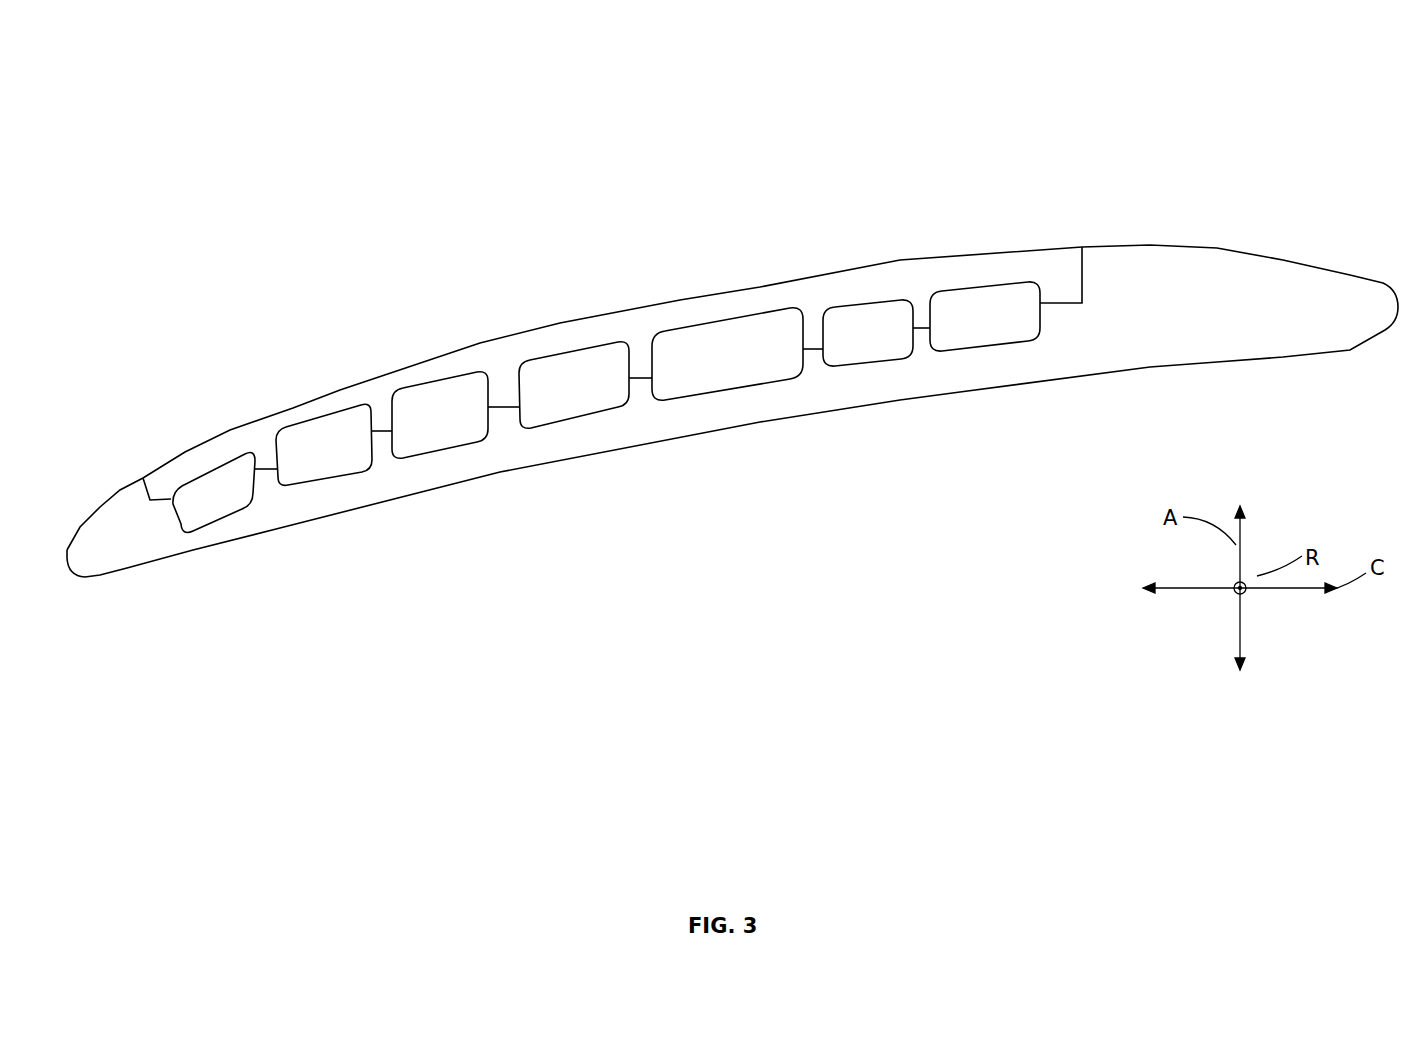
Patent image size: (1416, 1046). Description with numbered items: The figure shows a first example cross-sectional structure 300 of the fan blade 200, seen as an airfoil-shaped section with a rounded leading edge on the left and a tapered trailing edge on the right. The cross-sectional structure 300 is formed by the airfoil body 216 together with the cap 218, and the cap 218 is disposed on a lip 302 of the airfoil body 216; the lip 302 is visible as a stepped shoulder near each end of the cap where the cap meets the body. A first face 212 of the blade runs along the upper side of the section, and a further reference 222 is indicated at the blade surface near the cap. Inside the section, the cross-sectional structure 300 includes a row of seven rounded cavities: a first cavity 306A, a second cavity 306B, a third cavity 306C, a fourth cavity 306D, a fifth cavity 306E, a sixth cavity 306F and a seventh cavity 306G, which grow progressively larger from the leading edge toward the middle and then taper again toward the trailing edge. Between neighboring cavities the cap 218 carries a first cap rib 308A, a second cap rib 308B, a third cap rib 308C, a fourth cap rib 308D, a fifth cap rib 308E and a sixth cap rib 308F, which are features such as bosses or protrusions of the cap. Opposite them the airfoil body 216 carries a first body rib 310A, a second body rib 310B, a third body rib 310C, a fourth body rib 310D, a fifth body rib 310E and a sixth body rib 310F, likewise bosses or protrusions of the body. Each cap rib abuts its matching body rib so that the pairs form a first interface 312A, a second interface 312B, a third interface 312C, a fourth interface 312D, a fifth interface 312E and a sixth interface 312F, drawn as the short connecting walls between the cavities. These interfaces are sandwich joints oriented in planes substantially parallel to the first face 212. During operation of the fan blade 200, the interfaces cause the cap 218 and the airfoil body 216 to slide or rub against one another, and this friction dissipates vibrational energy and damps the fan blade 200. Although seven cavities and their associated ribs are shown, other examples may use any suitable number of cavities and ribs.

The fan blade 200 is at (1213, 97).
The cross-sectional structure 300 is at (1121, 160).
The skin 222 is at (1111, 198).
The cap 218 is at (1072, 247).
The first face 212 is at (915, 256).
The lip 302 is at (157, 503).
The airfoil body 216 is at (1112, 374).
The first cavity 306A is at (194, 536).
The second cavity 306B is at (318, 482).
The third cavity 306C is at (455, 447).
The fourth cavity 306D is at (582, 421).
The fifth cavity 306E is at (738, 392).
The sixth cavity 306F is at (875, 365).
The seventh cavity 306G is at (1020, 346).
The first cap rib 308A is at (255, 460).
The second cap rib 308B is at (366, 409).
The third cap rib 308C is at (486, 379).
The fourth cap rib 308D is at (617, 358).
The fifth cap rib 308E is at (800, 332).
The sixth cap rib 308F is at (911, 316).
The first body rib 310A is at (251, 512).
The second body rib 310B is at (388, 460).
The third body rib 310C is at (503, 424).
The fourth body rib 310D is at (642, 386).
The fifth body rib 310E is at (805, 380).
The sixth body rib 310F is at (918, 356).
The first interface 312A is at (265, 468).
The second interface 312B is at (385, 430).
The third interface 312C is at (505, 406).
The fourth interface 312D is at (640, 377).
The fifth interface 312E is at (811, 348).
The sixth interface 312F is at (920, 327).